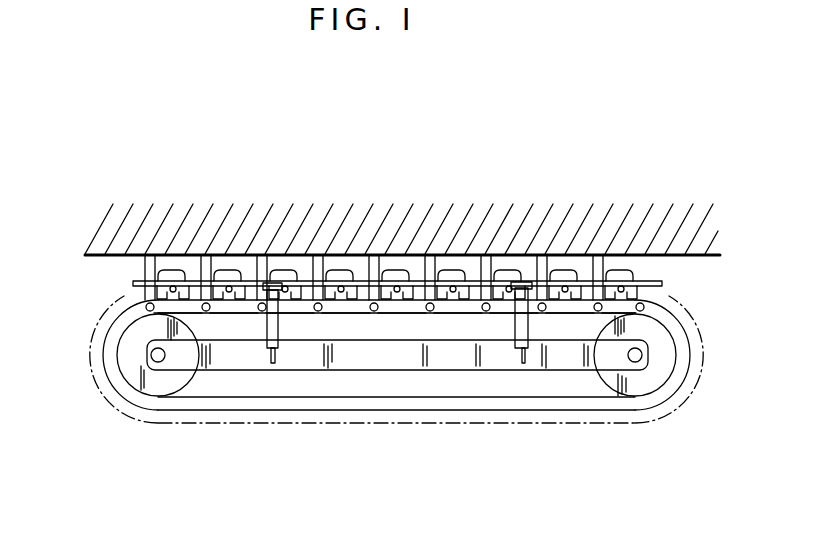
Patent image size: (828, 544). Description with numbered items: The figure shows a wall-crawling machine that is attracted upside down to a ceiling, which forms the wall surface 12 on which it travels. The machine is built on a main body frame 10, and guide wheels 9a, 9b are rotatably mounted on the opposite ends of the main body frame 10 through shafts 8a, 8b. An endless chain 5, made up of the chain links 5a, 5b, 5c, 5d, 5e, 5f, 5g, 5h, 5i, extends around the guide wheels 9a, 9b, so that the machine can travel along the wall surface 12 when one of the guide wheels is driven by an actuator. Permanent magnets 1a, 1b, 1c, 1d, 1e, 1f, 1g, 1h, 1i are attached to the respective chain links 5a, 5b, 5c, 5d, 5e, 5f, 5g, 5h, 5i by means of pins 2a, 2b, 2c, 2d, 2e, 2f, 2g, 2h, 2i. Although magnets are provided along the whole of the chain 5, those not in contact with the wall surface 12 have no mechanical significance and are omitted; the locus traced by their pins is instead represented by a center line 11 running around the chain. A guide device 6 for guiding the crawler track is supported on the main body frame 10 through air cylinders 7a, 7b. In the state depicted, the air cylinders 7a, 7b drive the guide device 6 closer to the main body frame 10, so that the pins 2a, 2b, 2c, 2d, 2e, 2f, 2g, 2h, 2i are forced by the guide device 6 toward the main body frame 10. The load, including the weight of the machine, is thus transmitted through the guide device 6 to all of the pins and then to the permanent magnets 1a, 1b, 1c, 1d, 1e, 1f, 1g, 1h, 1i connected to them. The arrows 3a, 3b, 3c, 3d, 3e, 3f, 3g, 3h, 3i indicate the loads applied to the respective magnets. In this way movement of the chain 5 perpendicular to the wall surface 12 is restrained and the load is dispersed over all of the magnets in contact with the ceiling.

The permanent magnet 1a is at (173, 297).
The permanent magnet 1b is at (229, 297).
The permanent magnet 1c is at (285, 297).
The permanent magnet 1d is at (341, 297).
The permanent magnet 1e is at (397, 297).
The permanent magnet 1f is at (453, 297).
The permanent magnet 1g is at (509, 297).
The permanent magnet 1h is at (565, 297).
The permanent magnet 1i is at (621, 297).
The pin 2a is at (172, 271).
The pin 2b is at (228, 271).
The pin 2c is at (284, 271).
The pin 2d is at (340, 271).
The pin 2e is at (396, 271).
The pin 2f is at (452, 271).
The pin 2g is at (508, 271).
The pin 2h is at (564, 271).
The pin 2i is at (620, 271).
The arrow 3a is at (158, 258).
The arrow 3b is at (214, 258).
The arrow 3c is at (270, 258).
The arrow 3d is at (326, 258).
The arrow 3e is at (382, 258).
The arrow 3f is at (438, 258).
The arrow 3g is at (494, 258).
The arrow 3h is at (550, 258).
The arrow 3i is at (606, 258).
The endless chain 5 is at (97, 385).
The chain link 5a is at (192, 308).
The chain link 5b is at (237, 308).
The chain link 5c is at (313, 308).
The chain link 5d is at (353, 308).
The chain link 5e is at (410, 308).
The chain link 5f is at (463, 308).
The chain link 5g is at (500, 308).
The chain link 5h is at (567, 308).
The chain link 5i is at (612, 308).
The guide device 6 is at (140, 256).
The air cylinder 7a is at (272, 364).
The air cylinder 7b is at (523, 364).
The shaft 8a is at (140, 375).
The shaft 8b is at (641, 380).
The guide wheel 9a is at (125, 396).
The guide wheel 9b is at (660, 373).
The main body frame 10 is at (149, 372).
The center line 11 is at (100, 369).
The wall surface 12 is at (100, 258).